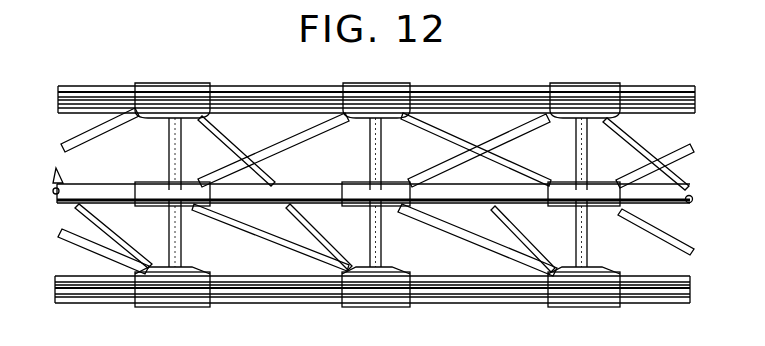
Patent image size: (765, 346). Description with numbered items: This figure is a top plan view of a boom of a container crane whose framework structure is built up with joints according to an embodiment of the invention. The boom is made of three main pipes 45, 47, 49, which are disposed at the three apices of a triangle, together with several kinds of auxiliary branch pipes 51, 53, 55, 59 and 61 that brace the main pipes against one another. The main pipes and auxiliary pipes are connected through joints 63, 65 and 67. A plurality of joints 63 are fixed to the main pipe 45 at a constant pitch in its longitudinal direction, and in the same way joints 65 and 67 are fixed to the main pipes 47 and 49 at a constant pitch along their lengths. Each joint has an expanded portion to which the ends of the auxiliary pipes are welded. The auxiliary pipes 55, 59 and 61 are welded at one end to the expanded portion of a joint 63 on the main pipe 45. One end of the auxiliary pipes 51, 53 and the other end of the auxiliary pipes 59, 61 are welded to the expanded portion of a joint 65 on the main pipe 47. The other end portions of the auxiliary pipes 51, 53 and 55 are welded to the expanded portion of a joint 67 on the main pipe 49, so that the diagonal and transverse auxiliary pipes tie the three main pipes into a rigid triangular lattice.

The main pipe 45 is at (439, 284).
The main pipe 47 is at (537, 183).
The main pipe 49 is at (499, 114).
The auxiliary branch pipe 51 is at (114, 130).
The auxiliary branch pipe 53 is at (376, 168).
The auxiliary branch pipe 55 is at (113, 228).
The auxiliary branch pipe 59 is at (232, 218).
The auxiliary branch pipe 61 is at (60, 237).
The joint 63 is at (184, 272).
The joint 65 is at (142, 183).
The joint 67 is at (180, 84).